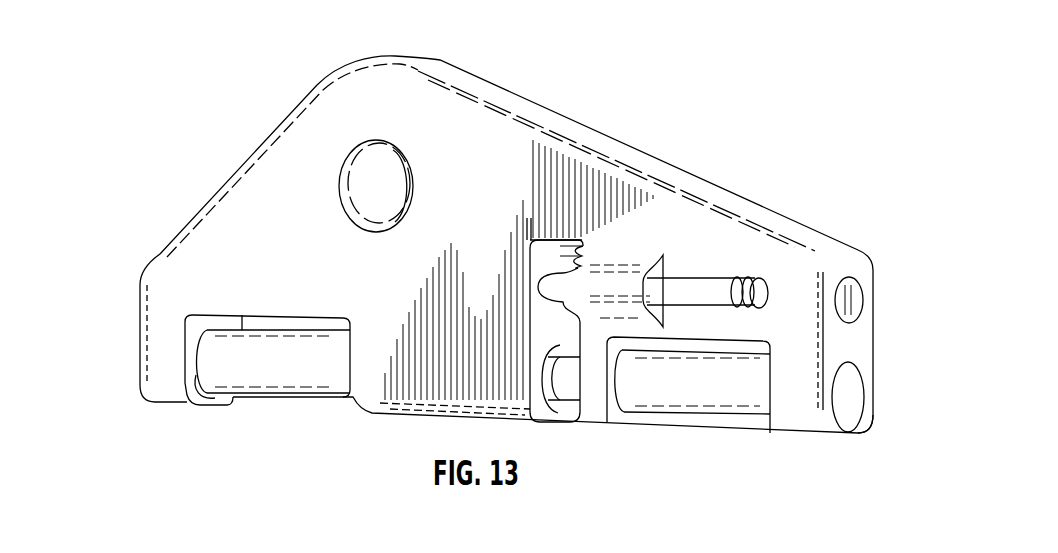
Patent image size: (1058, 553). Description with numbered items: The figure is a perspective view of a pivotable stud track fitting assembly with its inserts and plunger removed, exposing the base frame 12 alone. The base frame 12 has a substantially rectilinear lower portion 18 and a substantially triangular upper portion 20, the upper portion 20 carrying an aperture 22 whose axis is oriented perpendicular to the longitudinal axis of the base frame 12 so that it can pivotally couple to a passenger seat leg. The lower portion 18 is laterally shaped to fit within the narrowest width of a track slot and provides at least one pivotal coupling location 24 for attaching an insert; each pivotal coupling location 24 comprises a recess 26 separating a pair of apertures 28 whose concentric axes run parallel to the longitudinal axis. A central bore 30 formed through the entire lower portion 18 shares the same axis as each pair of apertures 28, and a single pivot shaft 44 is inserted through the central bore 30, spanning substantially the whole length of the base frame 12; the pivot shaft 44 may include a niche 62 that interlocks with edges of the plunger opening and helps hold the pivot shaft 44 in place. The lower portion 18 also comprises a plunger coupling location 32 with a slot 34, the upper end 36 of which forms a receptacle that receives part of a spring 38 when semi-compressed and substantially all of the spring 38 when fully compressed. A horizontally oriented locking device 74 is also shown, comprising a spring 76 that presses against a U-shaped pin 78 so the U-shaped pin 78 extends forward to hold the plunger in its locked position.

The base frame 12 is at (167, 260).
The lower portion 18 is at (143, 318).
The upper portion 20 is at (257, 167).
The aperture 22 is at (355, 147).
The pivotal coupling location 24 is at (192, 348).
The recess 26 is at (277, 323).
The apertures 28 is at (198, 373).
The central bore 30 is at (847, 393).
The plunger coupling location 32 is at (550, 250).
The slot 34 is at (528, 230).
The upper end 36 is at (572, 243).
The spring 38 is at (563, 257).
The pivot shaft 44 is at (842, 397).
The niche 62 is at (565, 383).
The locking device 74 is at (714, 272).
The spring 76 is at (757, 290).
The U-shaped pin 78 is at (688, 288).